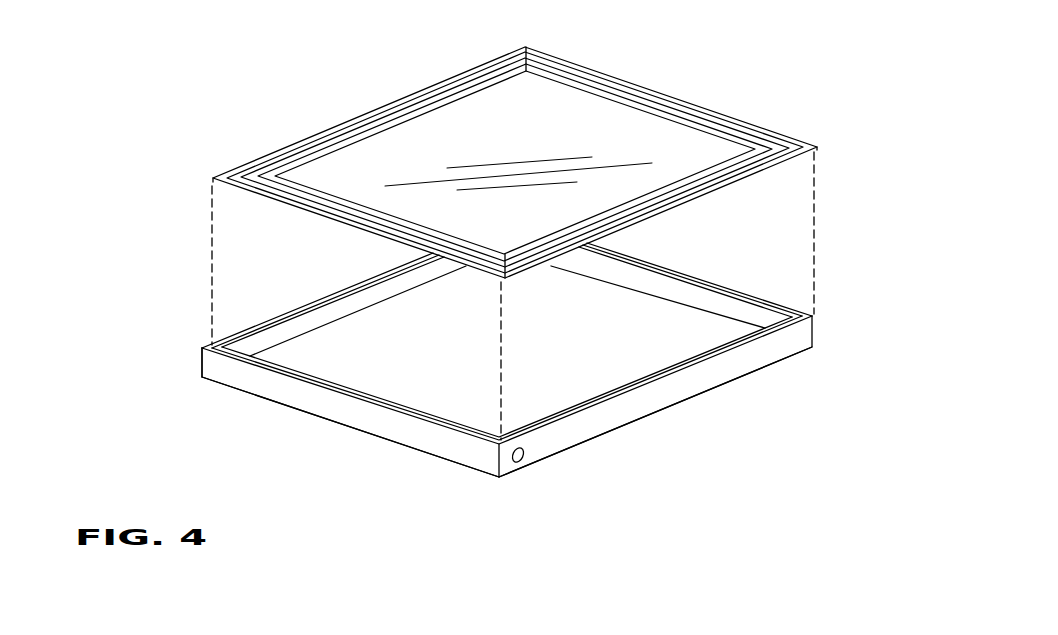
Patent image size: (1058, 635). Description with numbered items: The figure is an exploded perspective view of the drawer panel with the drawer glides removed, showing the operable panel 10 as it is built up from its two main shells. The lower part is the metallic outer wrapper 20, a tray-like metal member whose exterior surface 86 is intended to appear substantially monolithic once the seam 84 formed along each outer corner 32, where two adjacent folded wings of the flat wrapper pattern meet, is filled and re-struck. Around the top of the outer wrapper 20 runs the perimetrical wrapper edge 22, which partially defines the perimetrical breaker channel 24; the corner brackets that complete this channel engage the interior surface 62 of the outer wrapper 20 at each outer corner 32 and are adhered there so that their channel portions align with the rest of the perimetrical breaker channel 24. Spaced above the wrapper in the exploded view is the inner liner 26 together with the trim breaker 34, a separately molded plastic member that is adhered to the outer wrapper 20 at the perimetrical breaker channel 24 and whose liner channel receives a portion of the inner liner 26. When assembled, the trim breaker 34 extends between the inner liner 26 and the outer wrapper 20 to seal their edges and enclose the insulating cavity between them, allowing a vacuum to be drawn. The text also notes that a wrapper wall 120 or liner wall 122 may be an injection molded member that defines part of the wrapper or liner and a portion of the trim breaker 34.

The operable panel 10 is at (150, 275).
The metallic outer wrapper 20 is at (285, 407).
The perimetrical wrapper edge 22 is at (750, 303).
The perimetrical breaker channel 24 is at (731, 289).
The inner liner 26 is at (620, 135).
The outer corners 32 is at (200, 363).
The trim breaker 34 is at (215, 180).
The interior surface 62 is at (570, 360).
The seam 84 is at (497, 458).
The exterior surface 86 is at (615, 413).
The wrapper wall 120 is at (397, 423).
The liner wall 122 is at (387, 120).